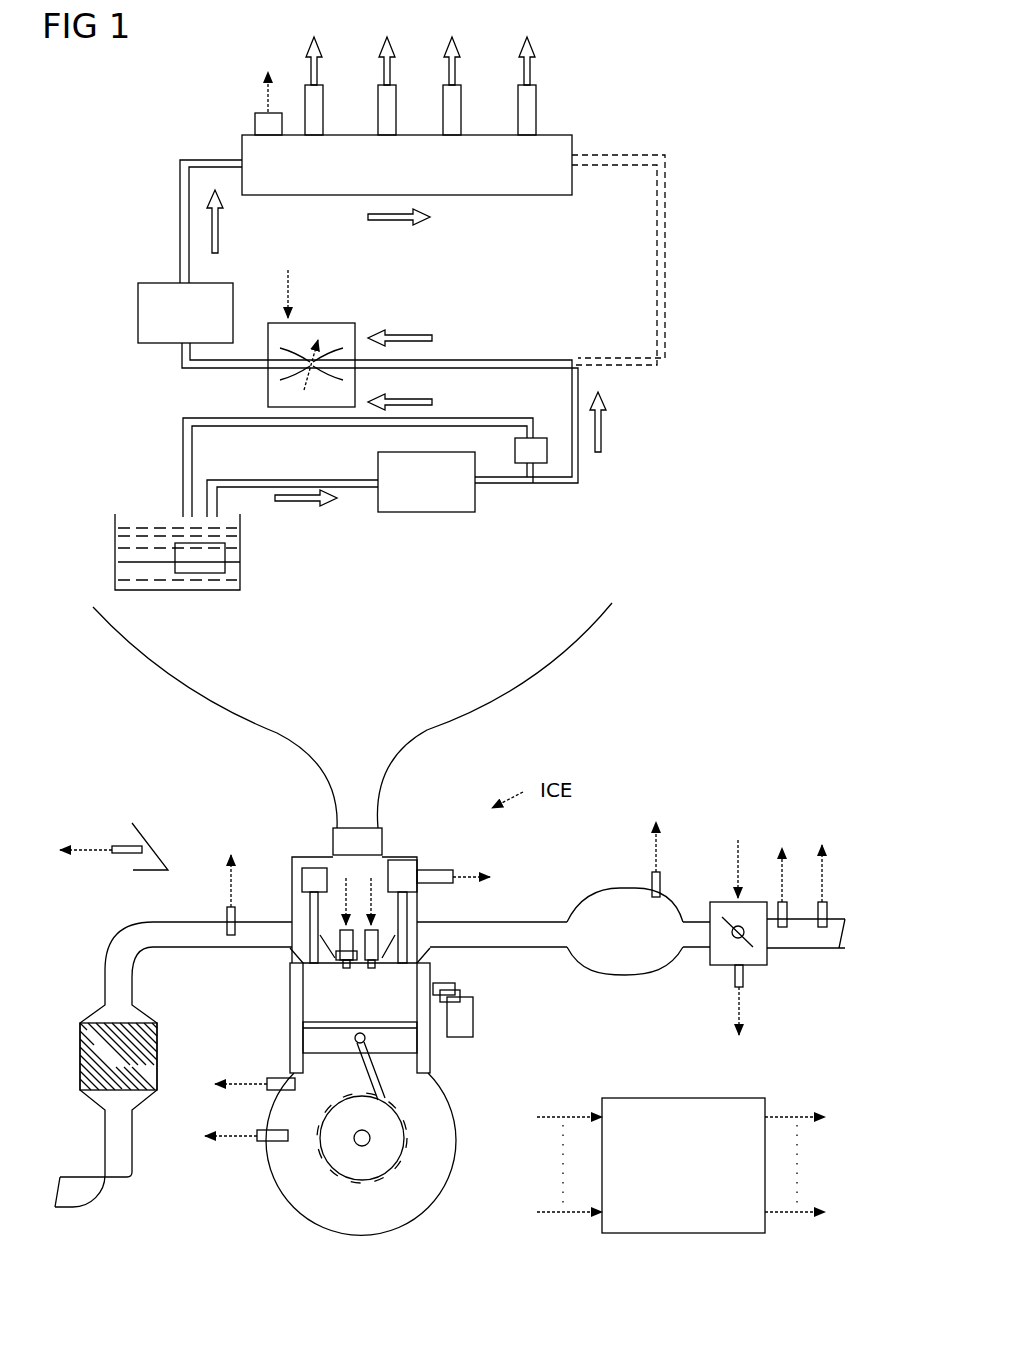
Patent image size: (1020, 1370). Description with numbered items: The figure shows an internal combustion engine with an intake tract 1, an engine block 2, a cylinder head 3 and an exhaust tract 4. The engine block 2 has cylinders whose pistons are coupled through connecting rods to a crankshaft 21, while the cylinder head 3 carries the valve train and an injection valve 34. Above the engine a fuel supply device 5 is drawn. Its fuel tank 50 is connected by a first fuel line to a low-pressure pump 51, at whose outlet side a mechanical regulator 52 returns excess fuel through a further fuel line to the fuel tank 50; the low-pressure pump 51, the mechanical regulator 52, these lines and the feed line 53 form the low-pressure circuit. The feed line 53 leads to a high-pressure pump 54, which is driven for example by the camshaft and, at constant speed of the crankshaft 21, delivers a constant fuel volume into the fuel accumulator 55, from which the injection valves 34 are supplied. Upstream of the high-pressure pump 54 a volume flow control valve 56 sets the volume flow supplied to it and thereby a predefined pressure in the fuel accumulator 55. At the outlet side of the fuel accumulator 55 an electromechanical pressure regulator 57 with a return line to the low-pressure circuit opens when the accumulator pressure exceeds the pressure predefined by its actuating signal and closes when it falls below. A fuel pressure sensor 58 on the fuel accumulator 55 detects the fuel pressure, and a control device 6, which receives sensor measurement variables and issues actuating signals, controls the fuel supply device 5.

The intake tract 1 is at (636, 992).
The engine block 2 is at (266, 1007).
The cylinder head 3 is at (292, 870).
The exhaust tract 4 is at (102, 938).
The fuel supply device 5 is at (382, 838).
The control device 6 is at (683, 1098).
The crankshaft 21 is at (364, 1150).
The injection valve 34 is at (386, 98).
The fuel tank 50 is at (113, 555).
The low-pressure pump 51 is at (430, 512).
The mechanical regulator 52 is at (535, 437).
The feed line 53 is at (546, 360).
The high-pressure pump 54 is at (138, 312).
The fuel accumulator 55 is at (498, 193).
The volume flow control valve 56 is at (308, 322).
The electromechanical pressure regulator 57 is at (578, 152).
The fuel pressure sensor 58 is at (253, 122).